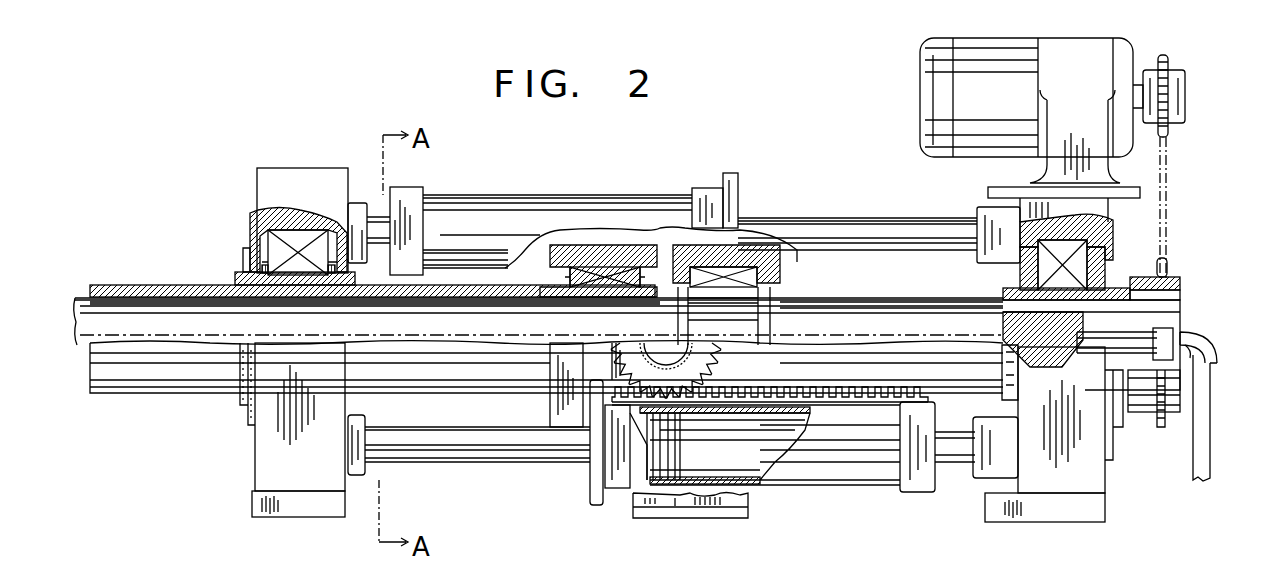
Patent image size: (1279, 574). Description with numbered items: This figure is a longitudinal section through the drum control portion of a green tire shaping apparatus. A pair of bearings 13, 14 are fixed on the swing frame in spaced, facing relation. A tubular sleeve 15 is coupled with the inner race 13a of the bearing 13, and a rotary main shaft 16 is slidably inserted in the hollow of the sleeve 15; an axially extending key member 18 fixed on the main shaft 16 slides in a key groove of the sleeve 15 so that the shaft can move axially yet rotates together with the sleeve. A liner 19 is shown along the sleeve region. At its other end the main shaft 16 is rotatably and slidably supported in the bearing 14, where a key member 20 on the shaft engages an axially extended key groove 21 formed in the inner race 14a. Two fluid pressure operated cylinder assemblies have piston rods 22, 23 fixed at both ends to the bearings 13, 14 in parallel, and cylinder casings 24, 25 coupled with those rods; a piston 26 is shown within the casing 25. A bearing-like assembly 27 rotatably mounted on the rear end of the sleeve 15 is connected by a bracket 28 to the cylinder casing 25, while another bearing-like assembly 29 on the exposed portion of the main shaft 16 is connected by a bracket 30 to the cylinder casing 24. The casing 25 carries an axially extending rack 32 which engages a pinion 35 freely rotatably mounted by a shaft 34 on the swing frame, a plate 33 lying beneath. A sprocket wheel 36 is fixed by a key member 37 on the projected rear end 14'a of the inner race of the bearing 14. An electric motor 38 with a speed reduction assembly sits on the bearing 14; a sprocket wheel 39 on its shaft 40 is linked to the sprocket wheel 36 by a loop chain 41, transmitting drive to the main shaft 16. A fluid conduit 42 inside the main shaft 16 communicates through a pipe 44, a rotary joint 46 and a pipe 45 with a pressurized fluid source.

The bearing 13 is at (242, 207).
The inner race of the bearing 13a is at (232, 278).
The bearing 14 is at (1113, 242).
The inner race of the bearing 14a is at (1003, 296).
The projected rear end of the inner race 14'a is at (1185, 295).
The tubular sleeve 15 is at (152, 299).
The rotary main shaft 16 is at (450, 312).
The key member 18 is at (195, 296).
The liner 19 is at (114, 300).
The key member 20 is at (930, 300).
The key groove 21 is at (1182, 314).
The piston rod 22 is at (917, 222).
The piston rod 23 is at (470, 450).
The cylinder casing 24 is at (483, 197).
The cylinder casing 25 is at (838, 486).
The piston 26 is at (690, 470).
The bearing-like assembly 27 is at (651, 262).
The bracket 28 is at (590, 500).
The bearing-like assembly 29 is at (782, 250).
The bracket 30 is at (738, 180).
The rack 32 is at (928, 396).
The plate 33 is at (716, 507).
The shaft 34 is at (612, 357).
The pinion 35 is at (712, 358).
The sprocket wheel 36 is at (1161, 428).
The key member 37 is at (1182, 285).
The electric motor 38 is at (1077, 46).
The sprocket wheel 39 is at (1170, 58).
The shaft of the motor 40 is at (1140, 85).
The loop chain 41 is at (1167, 180).
The fluid conduit 42 is at (1058, 352).
The pipe 44 is at (1120, 345).
The pipe 45 is at (1210, 445).
The rotary joint 46 is at (1212, 372).